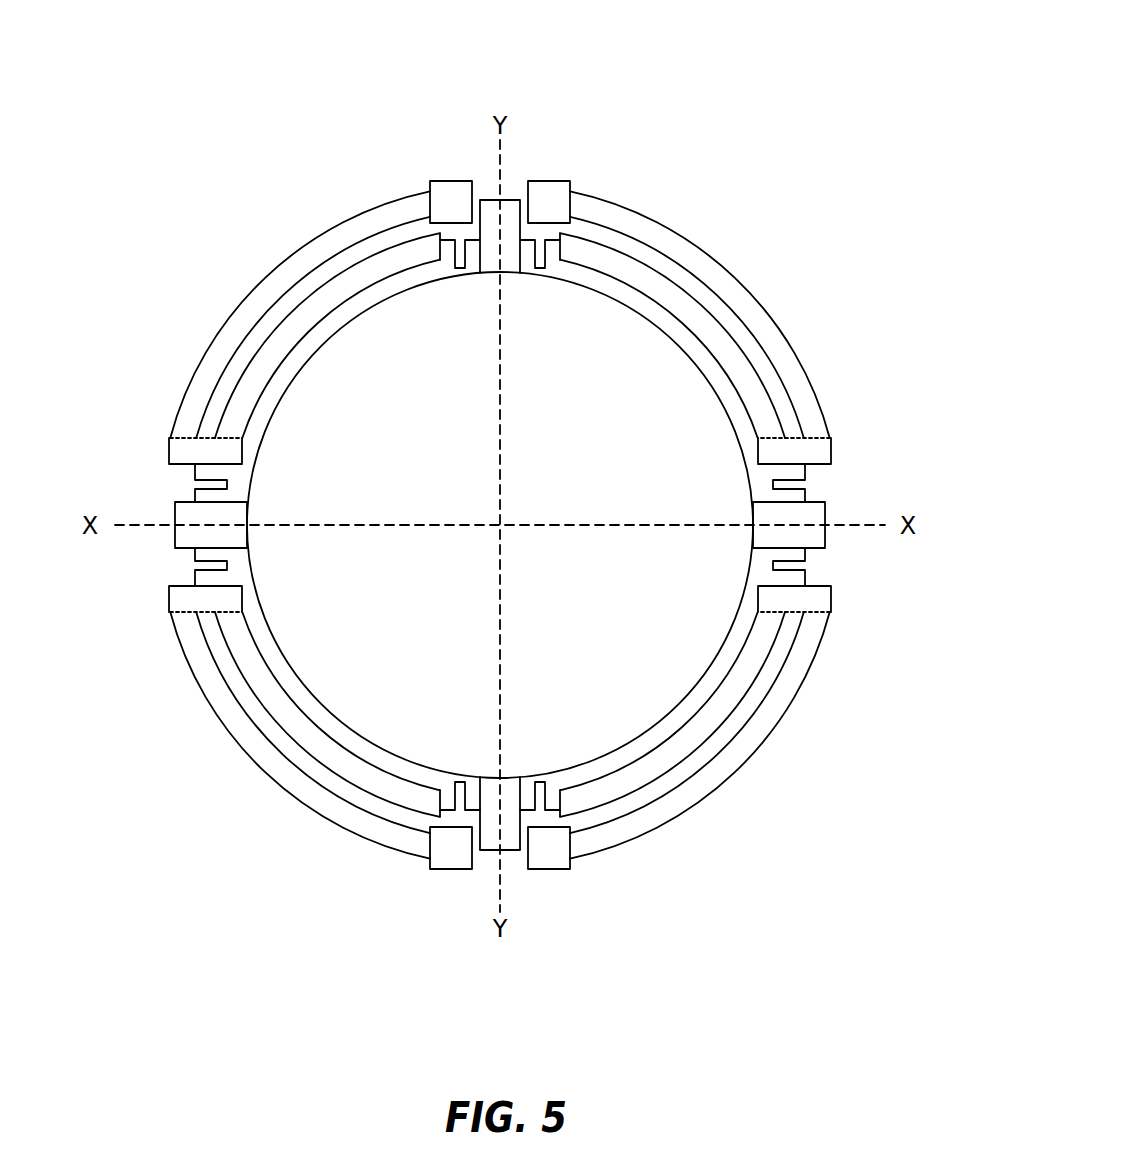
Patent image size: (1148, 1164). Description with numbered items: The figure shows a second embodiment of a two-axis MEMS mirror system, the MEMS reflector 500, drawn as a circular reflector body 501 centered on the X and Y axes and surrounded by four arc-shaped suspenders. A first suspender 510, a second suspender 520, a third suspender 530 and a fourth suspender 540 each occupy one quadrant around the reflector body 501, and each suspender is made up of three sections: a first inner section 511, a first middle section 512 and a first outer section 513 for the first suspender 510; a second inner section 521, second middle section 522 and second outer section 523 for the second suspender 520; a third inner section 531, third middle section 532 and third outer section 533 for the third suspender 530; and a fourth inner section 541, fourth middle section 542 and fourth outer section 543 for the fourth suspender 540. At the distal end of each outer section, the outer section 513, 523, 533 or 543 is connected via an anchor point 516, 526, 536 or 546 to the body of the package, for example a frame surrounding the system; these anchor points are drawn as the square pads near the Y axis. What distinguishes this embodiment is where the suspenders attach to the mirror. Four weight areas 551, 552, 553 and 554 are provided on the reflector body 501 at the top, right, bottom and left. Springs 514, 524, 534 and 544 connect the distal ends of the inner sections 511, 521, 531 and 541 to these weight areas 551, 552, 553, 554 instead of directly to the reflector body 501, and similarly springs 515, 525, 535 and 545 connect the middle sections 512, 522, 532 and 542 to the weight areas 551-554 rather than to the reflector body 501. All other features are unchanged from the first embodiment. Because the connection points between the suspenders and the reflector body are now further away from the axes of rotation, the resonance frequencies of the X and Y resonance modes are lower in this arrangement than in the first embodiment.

The MEMS reflector 500 is at (745, 108).
The reflector body 501 is at (610, 755).
The first suspender 510 is at (740, 291).
The first inner section 511 is at (755, 368).
The first middle section 512 is at (831, 452).
The first outer section 513 is at (733, 270).
The spring 514 is at (540, 272).
The spring 515 is at (771, 484).
The anchor point 516 is at (553, 181).
The second suspender 520 is at (740, 761).
The second inner section 521 is at (757, 678).
The second middle section 522 is at (831, 598).
The second outer section 523 is at (733, 780).
The spring 524 is at (540, 778).
The spring 525 is at (760, 566).
The anchor point 526 is at (550, 869).
The third suspender 530 is at (262, 761).
The third inner section 531 is at (245, 682).
The third middle section 532 is at (169, 598).
The third outer section 533 is at (267, 780).
The spring 534 is at (460, 778).
The spring 535 is at (240, 566).
The anchor point 536 is at (450, 869).
The fourth suspender 540 is at (262, 291).
The fourth inner section 541 is at (245, 368).
The fourth middle section 542 is at (169, 452).
The fourth outer section 543 is at (267, 270).
The spring 544 is at (460, 272).
The spring 545 is at (229, 484).
The anchor point 546 is at (447, 181).
The weight area 551 is at (488, 273).
The weight area 552 is at (755, 520).
The weight area 553 is at (512, 778).
The weight area 554 is at (248, 540).